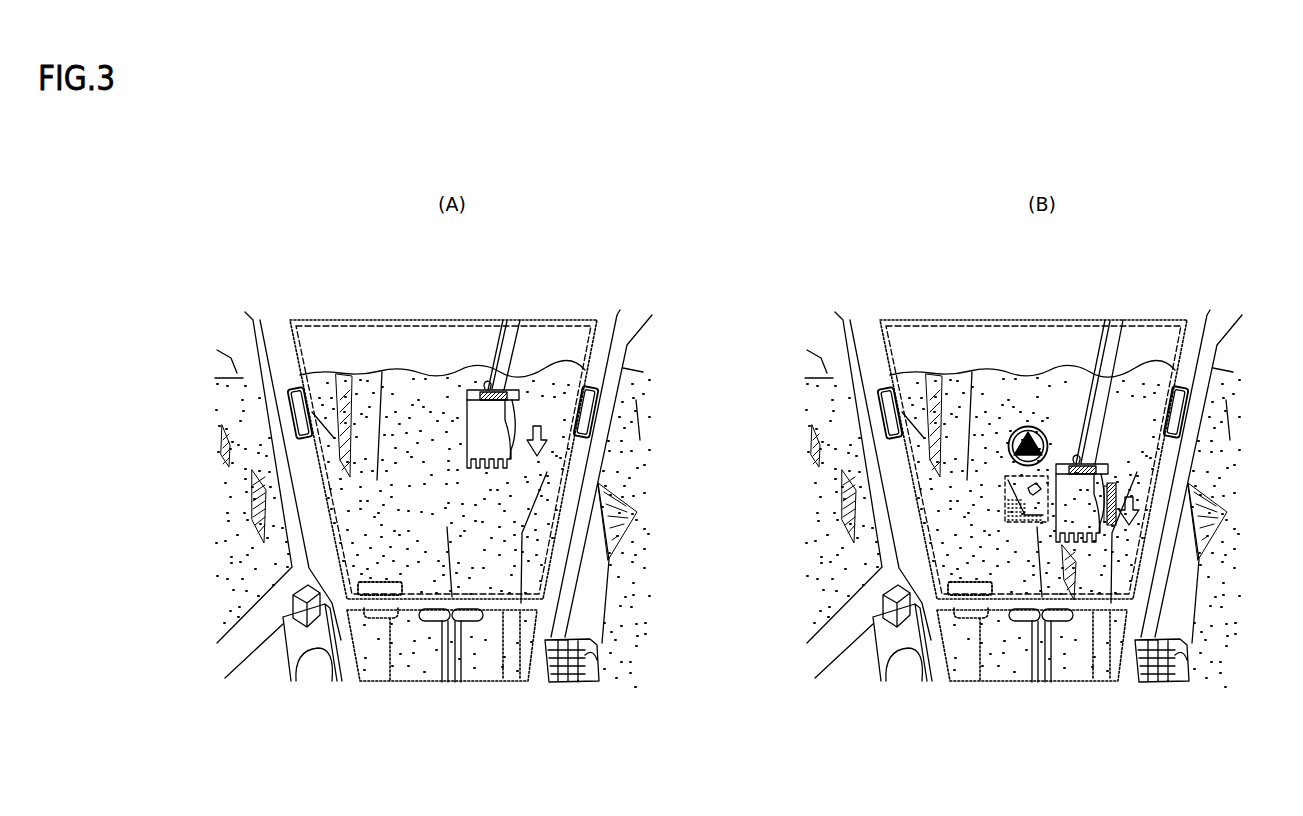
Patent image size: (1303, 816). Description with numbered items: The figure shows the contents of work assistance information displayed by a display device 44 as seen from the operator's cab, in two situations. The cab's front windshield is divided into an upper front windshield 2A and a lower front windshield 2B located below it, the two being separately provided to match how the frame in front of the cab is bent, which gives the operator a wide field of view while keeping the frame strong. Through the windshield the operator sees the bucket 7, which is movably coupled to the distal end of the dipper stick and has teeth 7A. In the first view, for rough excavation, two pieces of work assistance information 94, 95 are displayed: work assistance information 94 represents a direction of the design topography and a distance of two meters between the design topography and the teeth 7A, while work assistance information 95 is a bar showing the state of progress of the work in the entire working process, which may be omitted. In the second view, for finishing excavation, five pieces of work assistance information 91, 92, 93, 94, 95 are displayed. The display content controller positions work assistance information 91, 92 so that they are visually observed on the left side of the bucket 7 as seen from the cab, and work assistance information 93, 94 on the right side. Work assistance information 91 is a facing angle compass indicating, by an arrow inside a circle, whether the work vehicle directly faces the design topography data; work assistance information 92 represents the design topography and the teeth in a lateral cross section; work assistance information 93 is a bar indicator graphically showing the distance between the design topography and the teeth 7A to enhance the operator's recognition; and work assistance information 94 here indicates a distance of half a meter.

The front windshield 2A is at (315, 343).
The display device 44 is at (356, 320).
The bucket 7 is at (521, 410).
The work assistance information 94 is at (550, 404).
The front windshield 2B is at (373, 664).
The work assistance information 95 is at (400, 596).
The teeth 7A is at (510, 470).
The work assistance information 91 is at (1029, 427).
The work assistance information 92 is at (1004, 491).
The work assistance information 93 is at (1118, 534).